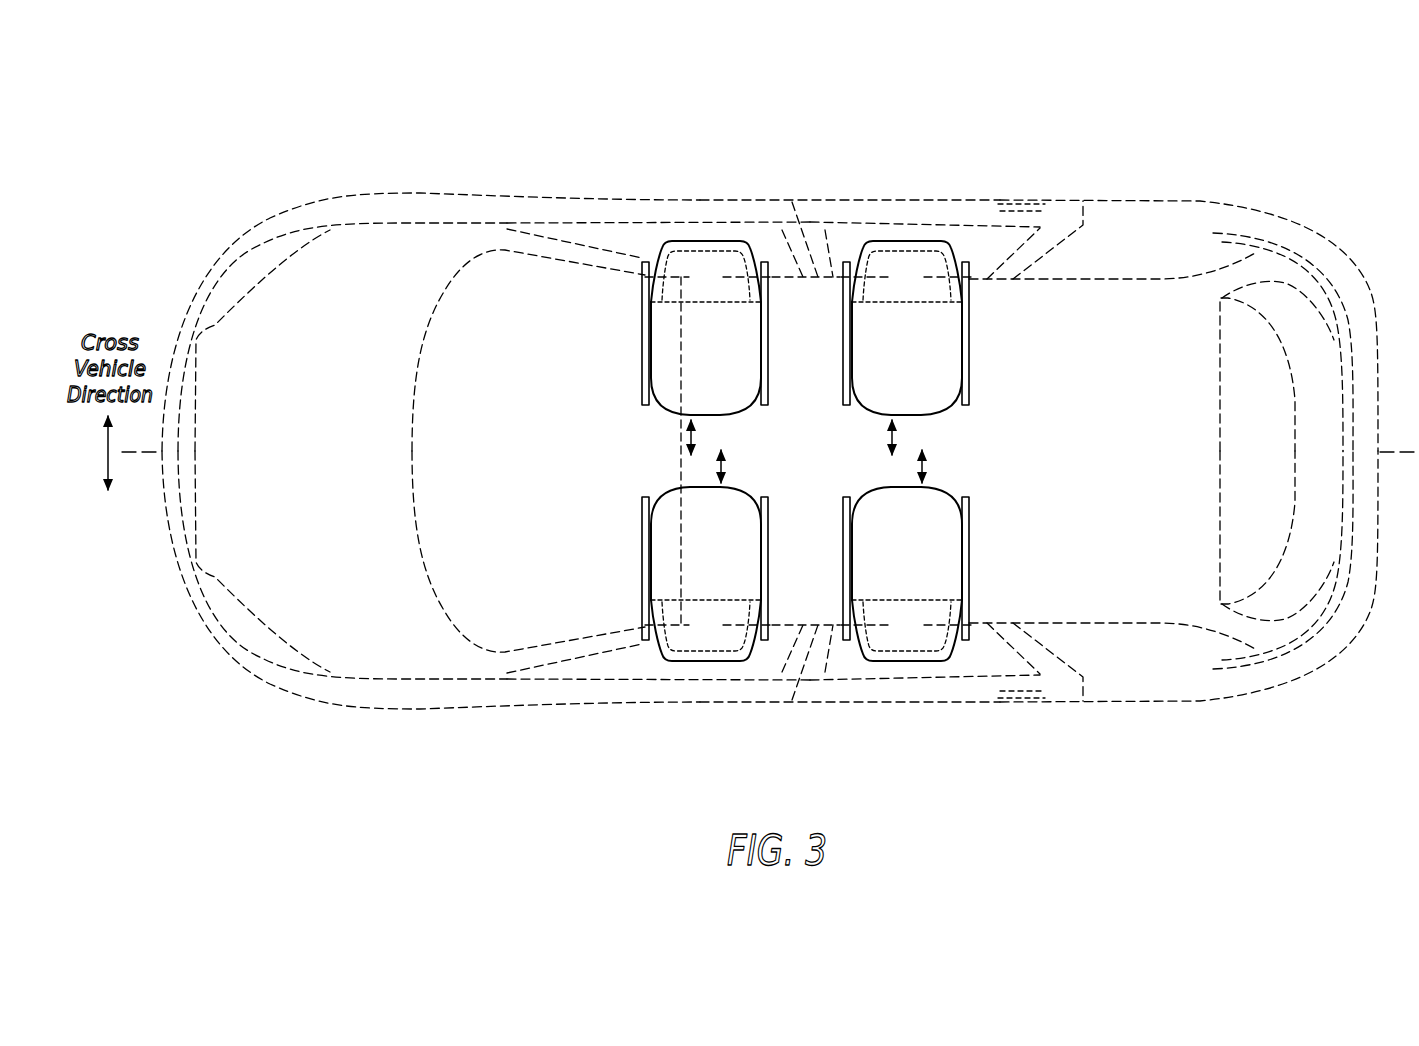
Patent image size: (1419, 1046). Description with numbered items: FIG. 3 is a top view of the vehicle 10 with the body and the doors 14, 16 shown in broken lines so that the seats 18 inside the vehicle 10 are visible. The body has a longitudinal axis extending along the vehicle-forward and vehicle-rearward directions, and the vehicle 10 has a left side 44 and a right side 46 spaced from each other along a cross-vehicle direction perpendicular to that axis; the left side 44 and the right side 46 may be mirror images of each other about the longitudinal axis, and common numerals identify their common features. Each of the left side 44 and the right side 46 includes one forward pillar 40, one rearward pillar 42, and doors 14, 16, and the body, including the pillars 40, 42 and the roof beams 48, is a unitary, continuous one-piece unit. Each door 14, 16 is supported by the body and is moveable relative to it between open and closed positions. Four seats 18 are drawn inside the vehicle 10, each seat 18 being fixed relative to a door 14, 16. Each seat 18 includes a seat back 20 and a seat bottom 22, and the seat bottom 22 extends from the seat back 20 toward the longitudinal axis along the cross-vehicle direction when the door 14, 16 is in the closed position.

The vehicle 10 is at (1314, 117).
The door 14 is at (645, 212).
The door 16 is at (888, 212).
The seat 18 is at (632, 362).
The seat back 20 is at (916, 640).
The seat bottom 22 is at (916, 565).
The forward pillar 40 is at (588, 247).
The rearward pillar 42 is at (1103, 238).
The left side 44 is at (801, 740).
The right side 46 is at (801, 152).
The roof beam 48 is at (1040, 282).